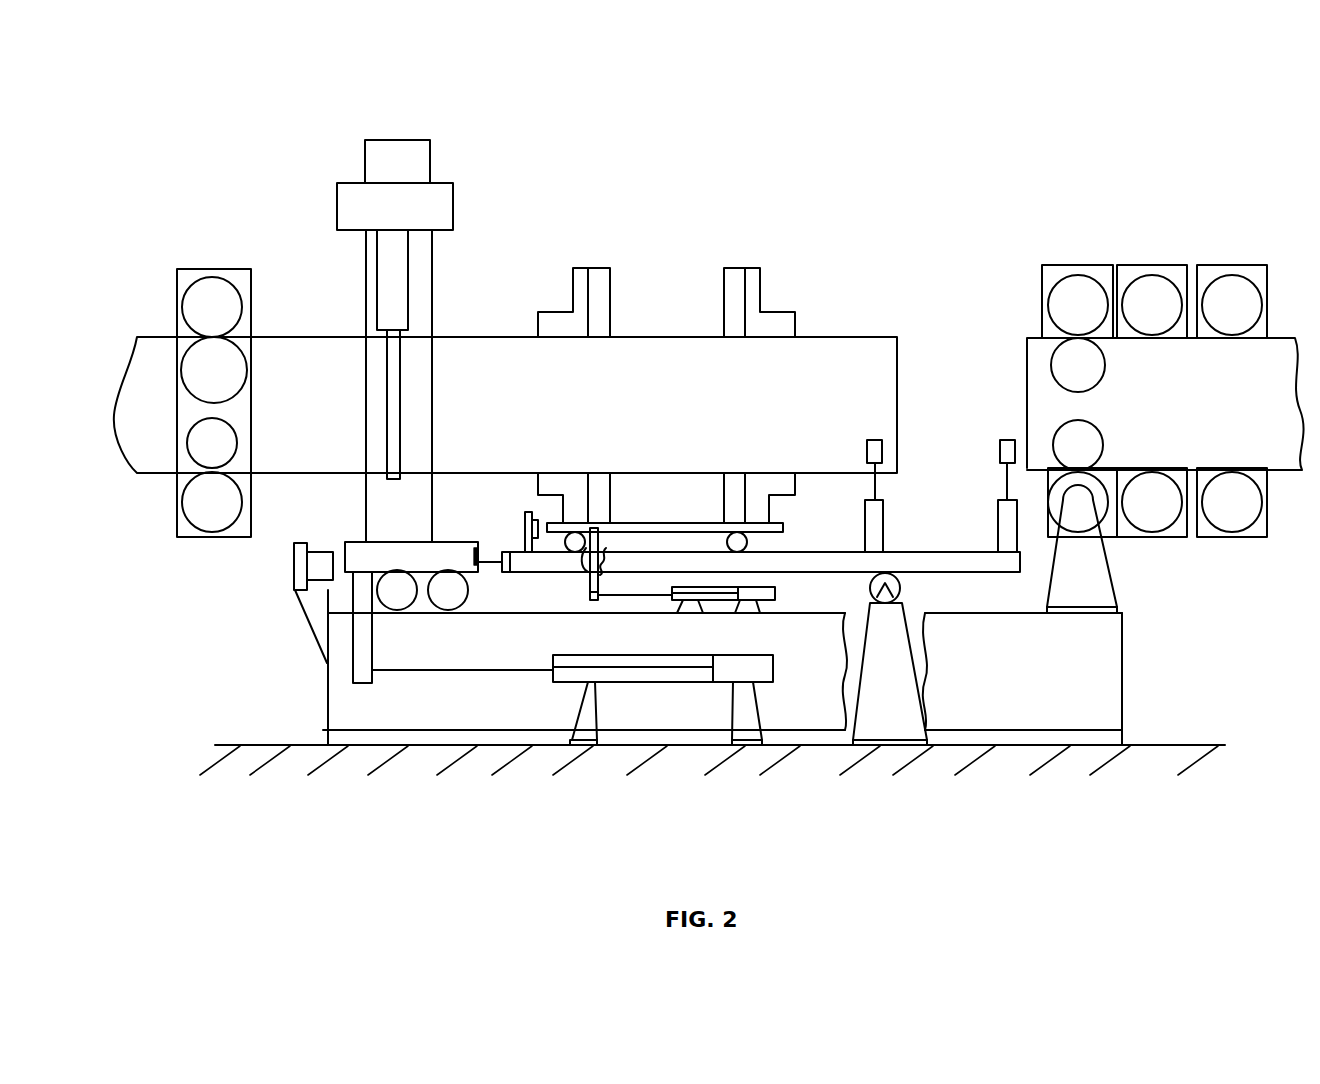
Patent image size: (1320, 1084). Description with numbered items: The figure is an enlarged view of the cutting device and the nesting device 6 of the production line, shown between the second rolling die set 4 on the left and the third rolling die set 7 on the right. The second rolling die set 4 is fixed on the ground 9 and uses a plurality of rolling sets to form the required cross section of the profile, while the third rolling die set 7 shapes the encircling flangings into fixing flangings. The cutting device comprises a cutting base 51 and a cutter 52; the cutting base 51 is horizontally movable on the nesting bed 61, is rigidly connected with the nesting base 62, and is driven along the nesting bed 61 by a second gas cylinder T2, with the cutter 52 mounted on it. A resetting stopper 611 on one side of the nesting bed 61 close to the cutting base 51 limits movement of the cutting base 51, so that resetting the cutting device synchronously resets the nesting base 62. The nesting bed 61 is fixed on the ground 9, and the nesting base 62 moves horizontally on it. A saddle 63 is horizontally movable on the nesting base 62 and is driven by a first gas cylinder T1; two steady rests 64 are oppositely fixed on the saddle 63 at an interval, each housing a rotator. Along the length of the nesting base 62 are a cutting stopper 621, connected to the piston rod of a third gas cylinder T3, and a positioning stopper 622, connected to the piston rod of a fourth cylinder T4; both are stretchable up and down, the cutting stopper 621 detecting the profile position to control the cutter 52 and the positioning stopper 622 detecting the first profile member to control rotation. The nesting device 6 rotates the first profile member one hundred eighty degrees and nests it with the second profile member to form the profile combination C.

The second rolling die set 4 is at (203, 252).
The cutter 52 is at (392, 377).
The cutting base 51 is at (390, 555).
The nesting device 6 is at (710, 207).
The nesting bed 61 is at (488, 700).
The resetting stopper 611 is at (317, 563).
The nesting base 62 is at (953, 563).
The cutting stopper 621 is at (878, 438).
The positioning stopper 622 is at (1005, 437).
The saddle 63 is at (655, 522).
The steady rest 64 is at (596, 298).
The third rolling die set 7 is at (1167, 245).
The ground 9 is at (1095, 748).
The profile combination C is at (832, 365).
The first gas cylinder T1 is at (753, 592).
The second gas cylinder T2 is at (612, 660).
The third gas cylinder T3 is at (877, 527).
The fourth cylinder T4 is at (1007, 527).